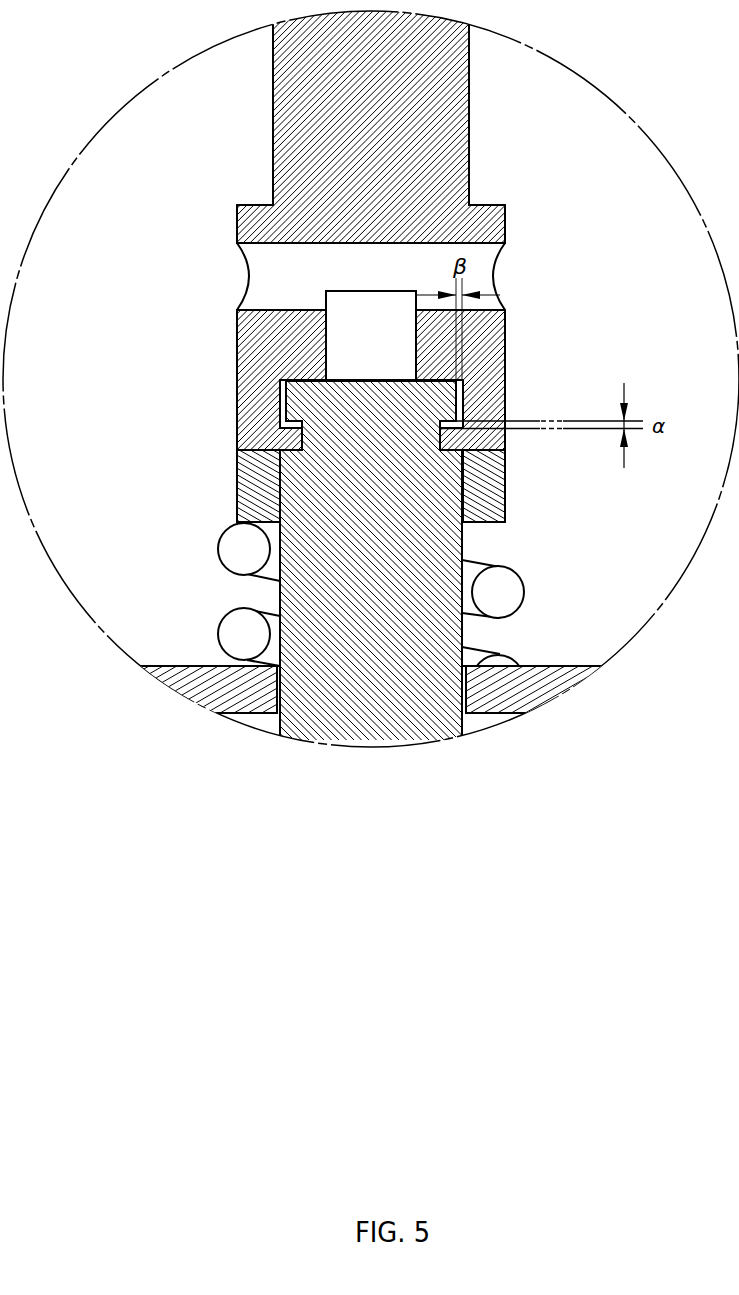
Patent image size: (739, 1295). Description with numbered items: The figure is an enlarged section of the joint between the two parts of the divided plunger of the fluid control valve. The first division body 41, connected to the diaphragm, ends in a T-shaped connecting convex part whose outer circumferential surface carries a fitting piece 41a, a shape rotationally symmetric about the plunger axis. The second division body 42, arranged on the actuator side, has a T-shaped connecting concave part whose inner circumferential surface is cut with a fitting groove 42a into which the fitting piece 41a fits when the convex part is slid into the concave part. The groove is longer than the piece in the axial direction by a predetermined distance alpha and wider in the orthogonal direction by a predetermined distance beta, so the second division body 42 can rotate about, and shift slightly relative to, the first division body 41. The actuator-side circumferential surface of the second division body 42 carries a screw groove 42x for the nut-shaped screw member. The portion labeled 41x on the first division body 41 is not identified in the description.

The first division body 41 is at (317, 725).
The second division body 42 is at (457, 97).
The fitting piece 41a is at (283, 422).
The fitting groove 42a is at (281, 389).
The shaft neck engagement portion 41x is at (441, 438).
The screw groove 42x is at (508, 398).